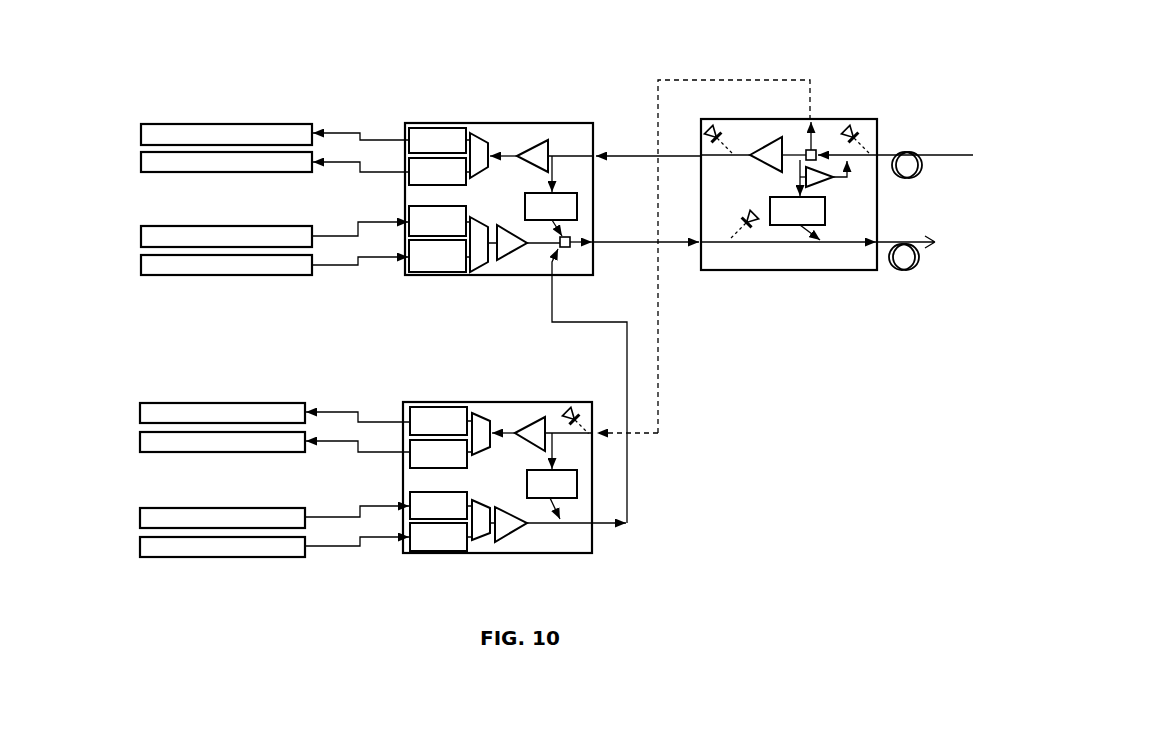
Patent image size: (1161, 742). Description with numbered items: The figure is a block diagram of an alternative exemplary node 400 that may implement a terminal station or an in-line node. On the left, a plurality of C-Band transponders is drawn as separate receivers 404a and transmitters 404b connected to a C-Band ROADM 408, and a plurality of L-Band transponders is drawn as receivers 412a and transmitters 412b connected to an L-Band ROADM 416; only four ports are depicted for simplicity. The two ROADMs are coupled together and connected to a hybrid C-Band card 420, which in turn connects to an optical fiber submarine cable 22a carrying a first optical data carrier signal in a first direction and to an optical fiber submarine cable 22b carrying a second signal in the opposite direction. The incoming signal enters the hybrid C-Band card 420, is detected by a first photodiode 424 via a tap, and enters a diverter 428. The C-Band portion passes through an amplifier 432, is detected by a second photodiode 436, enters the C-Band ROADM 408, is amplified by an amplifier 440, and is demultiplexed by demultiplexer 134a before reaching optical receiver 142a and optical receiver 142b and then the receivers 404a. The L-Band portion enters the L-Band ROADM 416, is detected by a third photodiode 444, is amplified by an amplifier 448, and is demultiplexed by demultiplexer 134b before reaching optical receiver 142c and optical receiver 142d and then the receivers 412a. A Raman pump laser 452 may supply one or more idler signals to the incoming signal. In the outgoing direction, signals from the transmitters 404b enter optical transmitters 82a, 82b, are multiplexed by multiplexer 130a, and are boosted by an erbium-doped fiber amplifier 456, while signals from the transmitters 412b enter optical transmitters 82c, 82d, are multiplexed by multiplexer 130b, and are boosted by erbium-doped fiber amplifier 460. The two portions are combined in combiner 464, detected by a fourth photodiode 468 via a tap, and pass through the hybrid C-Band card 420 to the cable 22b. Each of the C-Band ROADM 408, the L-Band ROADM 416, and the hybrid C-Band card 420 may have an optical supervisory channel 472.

The node 400 is at (316, 58).
The receivers of the C-Band transponders 404a is at (140, 124).
The transmitters of the C-Band transponders 404b is at (140, 226).
The receivers of the L-Band transponders 412a is at (140, 403).
The transmitters of the L-Band transponders 412b is at (140, 508).
The C-Band ROADM 408 is at (575, 122).
The L-Band ROADM 416 is at (592, 553).
The hybrid C-Band card 420 is at (838, 118).
The optical receiver 142a is at (437, 140).
The optical receiver 142b is at (437, 171).
The optical receiver 142c is at (438, 421).
The optical receiver 142d is at (438, 454).
The optical transmitter 82a is at (437, 221).
The optical transmitter 82b is at (437, 256).
The optical transmitter 82c is at (438, 505).
The optical transmitter 82d is at (438, 537).
The demultiplexer 134a is at (478, 133).
The demultiplexer 134b is at (478, 413).
The multiplexer 130a is at (478, 272).
The multiplexer 130b is at (478, 552).
The amplifier 440 is at (523, 140).
The amplifier 448 is at (528, 417).
The erbium-doped fiber amplifier 456 is at (515, 262).
The erbium-doped fiber amplifier 460 is at (510, 545).
The combiner 464 is at (568, 249).
The third photodiode 444 is at (575, 410).
The optical supervisory channel 472 is at (675, 345).
The amplifier 432 is at (760, 137).
The diverter 428 is at (806, 147).
The Raman pump laser 452 is at (830, 183).
The second photodiode 436 is at (710, 130).
The first photodiode 424 is at (857, 122).
The fourth photodiode 468 is at (740, 218).
The optical fiber submarine cable 22a is at (905, 152).
The optical fiber submarine cable 22b is at (905, 272).